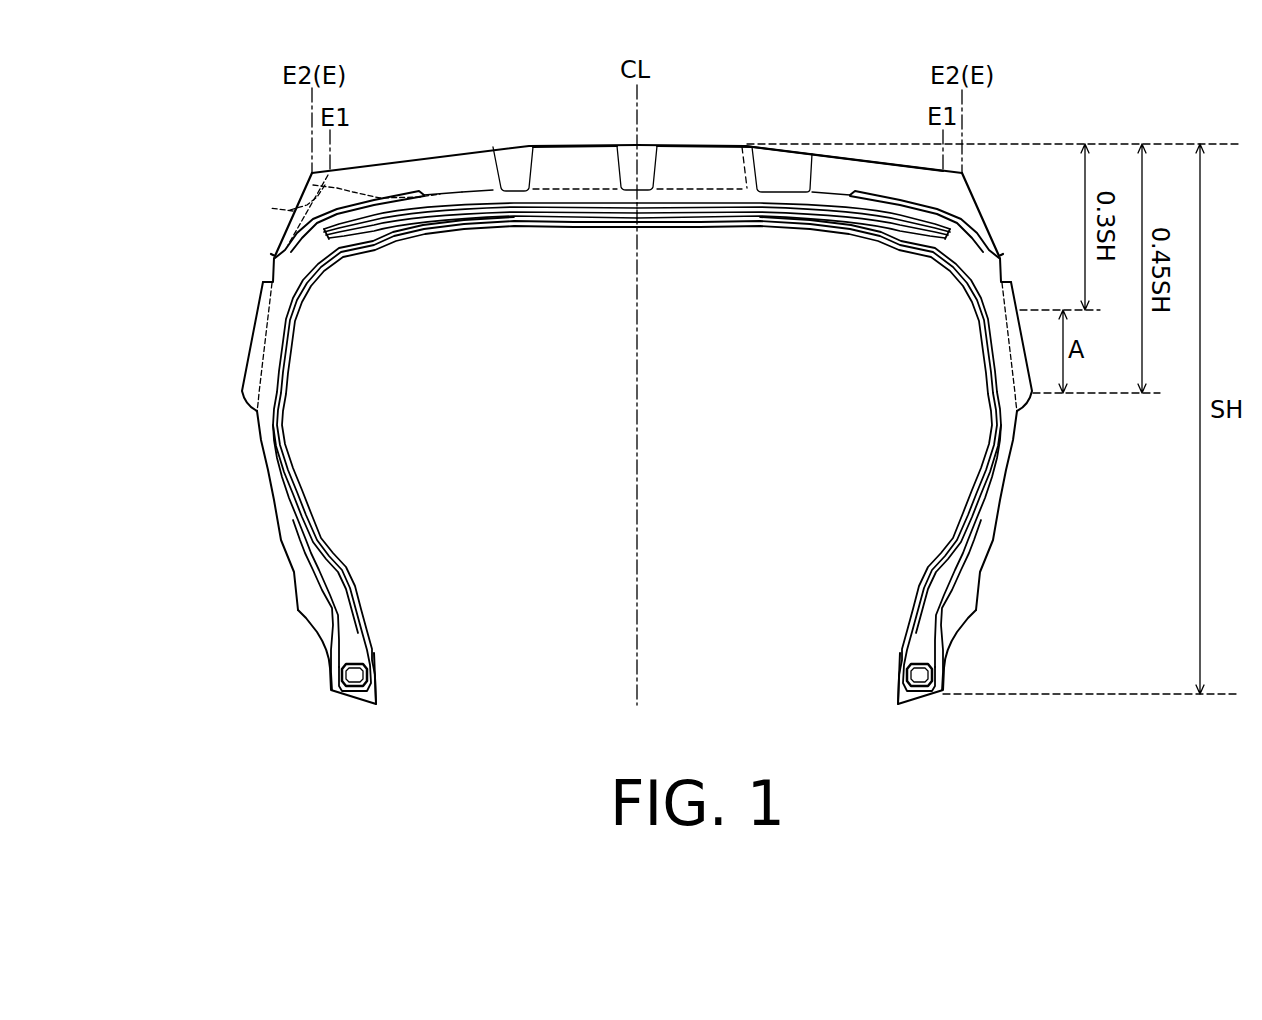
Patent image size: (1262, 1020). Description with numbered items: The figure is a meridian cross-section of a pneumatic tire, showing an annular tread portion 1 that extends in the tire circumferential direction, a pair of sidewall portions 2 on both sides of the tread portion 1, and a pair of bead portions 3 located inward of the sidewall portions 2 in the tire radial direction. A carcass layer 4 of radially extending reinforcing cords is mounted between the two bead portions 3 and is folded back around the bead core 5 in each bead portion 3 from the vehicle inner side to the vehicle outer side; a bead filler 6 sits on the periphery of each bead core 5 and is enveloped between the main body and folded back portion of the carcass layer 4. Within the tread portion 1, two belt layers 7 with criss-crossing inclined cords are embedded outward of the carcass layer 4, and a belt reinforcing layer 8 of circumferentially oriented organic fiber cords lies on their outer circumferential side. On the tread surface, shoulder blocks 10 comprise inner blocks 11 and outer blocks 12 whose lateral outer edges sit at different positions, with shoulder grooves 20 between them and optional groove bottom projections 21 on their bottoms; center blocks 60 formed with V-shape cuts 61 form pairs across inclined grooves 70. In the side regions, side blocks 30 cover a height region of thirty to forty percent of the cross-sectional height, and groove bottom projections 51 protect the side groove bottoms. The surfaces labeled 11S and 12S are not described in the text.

The tread portion 1 is at (747, 128).
The sidewall portion 2 is at (245, 442).
The bead portion 3 is at (318, 684).
The carcass layer 4 is at (940, 262).
The bead core 5 is at (360, 676).
The bead filler 6 is at (347, 605).
The belt layer 7 is at (747, 210).
The belt reinforcing layer 8 is at (855, 213).
The shoulder block 10 is at (616, 174).
The inner block 11 is at (895, 163).
The outer block 12 is at (418, 150).
The shoulder groove 20 is at (452, 193).
The groove bottom projection 21 is at (297, 195).
The side block 30 is at (1010, 303).
The groove bottom projection 51 is at (1002, 275).
The center block 60 is at (598, 147).
The V-shape cut 61 is at (528, 190).
The inclined groove 70 is at (648, 150).
The cap tread surface 11S is at (293, 211).
The shoulder surface 12S is at (285, 229).